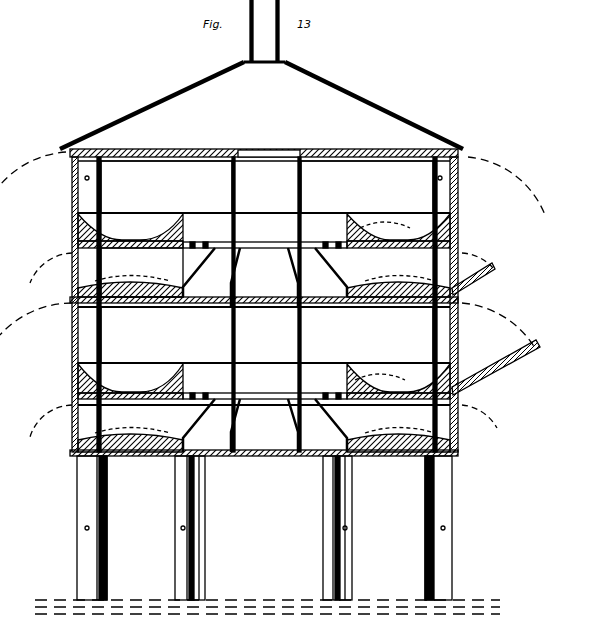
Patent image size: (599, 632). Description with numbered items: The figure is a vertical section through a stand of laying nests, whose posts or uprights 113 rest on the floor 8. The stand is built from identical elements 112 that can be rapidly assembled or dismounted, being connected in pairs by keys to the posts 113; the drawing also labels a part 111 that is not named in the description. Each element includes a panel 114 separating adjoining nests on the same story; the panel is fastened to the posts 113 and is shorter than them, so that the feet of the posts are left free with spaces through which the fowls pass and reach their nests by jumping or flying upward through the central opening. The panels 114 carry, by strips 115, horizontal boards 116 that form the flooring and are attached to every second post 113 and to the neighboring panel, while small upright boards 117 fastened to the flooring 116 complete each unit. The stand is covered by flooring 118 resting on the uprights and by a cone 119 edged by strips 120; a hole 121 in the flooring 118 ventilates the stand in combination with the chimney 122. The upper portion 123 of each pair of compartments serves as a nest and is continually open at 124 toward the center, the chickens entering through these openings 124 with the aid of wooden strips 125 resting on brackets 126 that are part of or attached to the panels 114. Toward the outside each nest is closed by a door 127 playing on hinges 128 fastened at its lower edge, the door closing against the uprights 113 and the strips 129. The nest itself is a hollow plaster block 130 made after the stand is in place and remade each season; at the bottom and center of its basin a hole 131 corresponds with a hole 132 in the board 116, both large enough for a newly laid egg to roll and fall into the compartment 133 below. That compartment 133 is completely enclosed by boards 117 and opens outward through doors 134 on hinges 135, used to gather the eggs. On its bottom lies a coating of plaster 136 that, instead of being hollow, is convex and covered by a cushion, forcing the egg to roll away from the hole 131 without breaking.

The floor 8 is at (118, 602).
The upper compartment 111 is at (166, 251).
The element 112 is at (267, 335).
The post 113 is at (264, 388).
The panel 114 is at (192, 326).
The strip 115 is at (118, 308).
The horizontal board 116 is at (152, 320).
The upright board 117 is at (192, 258).
The flooring 118 is at (135, 150).
The cone 119 is at (200, 93).
The strip 120 is at (66, 152).
The hole 121 is at (258, 151).
The chimney 122 is at (264, 31).
The upper portion 123 is at (367, 246).
The opening 124 is at (264, 295).
The wooden strip 125 is at (320, 241).
The bracket 126 is at (289, 350).
The door 127 is at (458, 206).
The hinge 128 is at (456, 244).
The strip 129 is at (462, 150).
The hollow plaster block 130 is at (455, 229).
The hole 131 is at (408, 376).
The hole 132 is at (264, 376).
The compartment 133 is at (264, 356).
The door 134 is at (486, 283).
The hinge 135 is at (460, 295).
The coating of plaster 136 is at (460, 430).